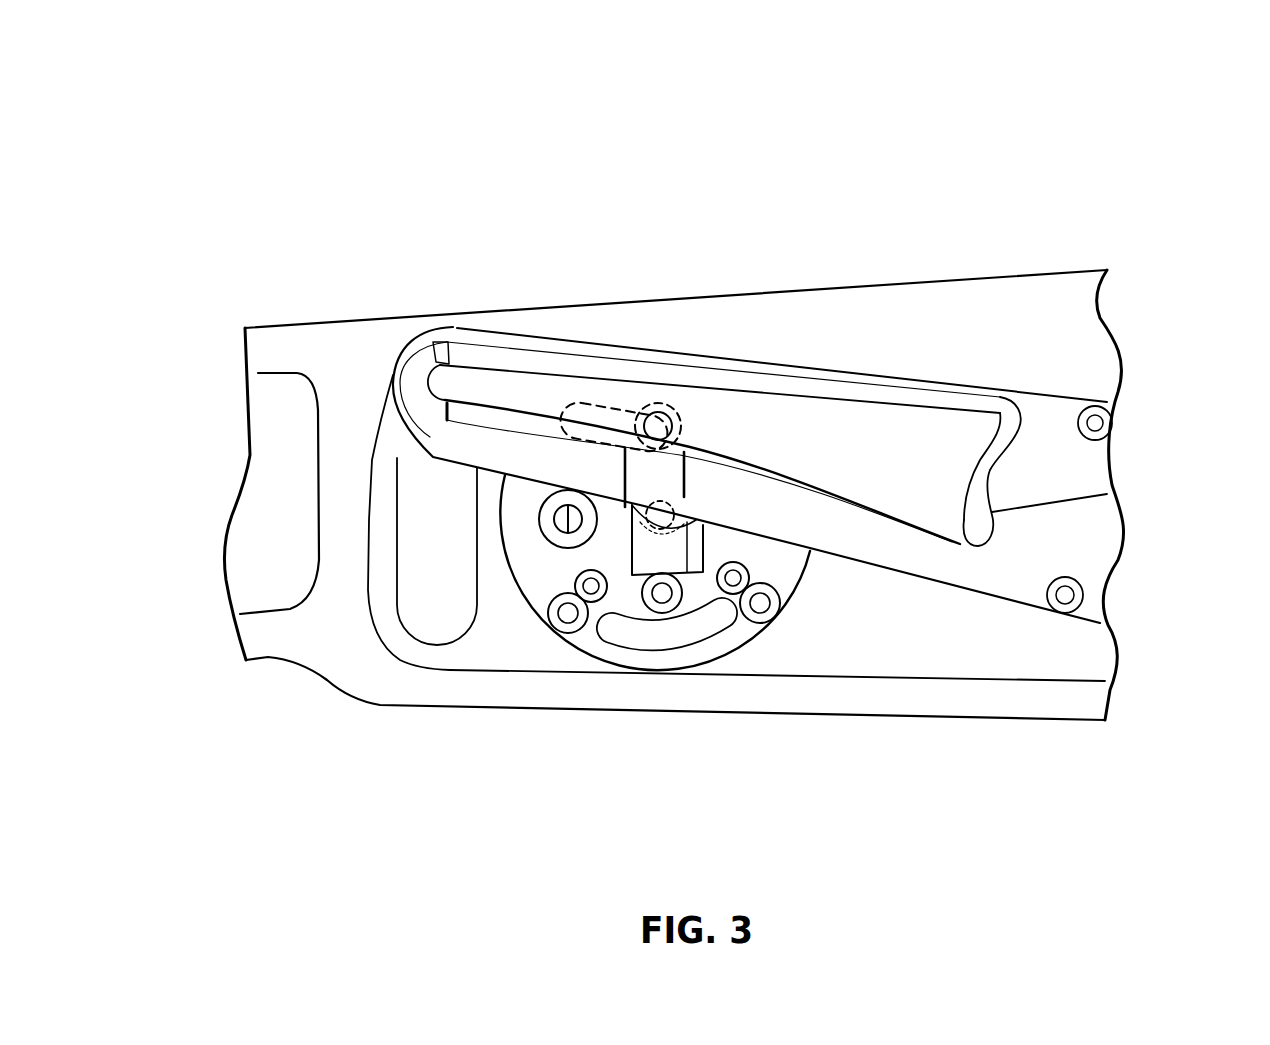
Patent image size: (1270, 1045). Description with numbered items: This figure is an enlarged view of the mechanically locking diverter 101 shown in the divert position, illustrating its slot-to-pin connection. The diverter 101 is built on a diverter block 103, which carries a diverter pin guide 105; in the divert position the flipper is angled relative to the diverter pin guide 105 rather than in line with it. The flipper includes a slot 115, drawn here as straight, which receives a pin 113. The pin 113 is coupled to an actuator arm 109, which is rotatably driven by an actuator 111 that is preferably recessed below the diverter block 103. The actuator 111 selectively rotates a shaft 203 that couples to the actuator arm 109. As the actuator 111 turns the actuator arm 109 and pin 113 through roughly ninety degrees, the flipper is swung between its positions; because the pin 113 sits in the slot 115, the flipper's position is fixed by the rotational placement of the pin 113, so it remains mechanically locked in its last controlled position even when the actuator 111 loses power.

The mechanically locking diverter 101 is at (300, 258).
The diverter block 103 is at (325, 685).
The diverter pin guide 105 is at (1057, 503).
The actuator arm 109 is at (686, 487).
The actuator 111 is at (728, 655).
The pin 113 is at (656, 408).
The slot 115 is at (563, 410).
The shaft 203 is at (658, 522).